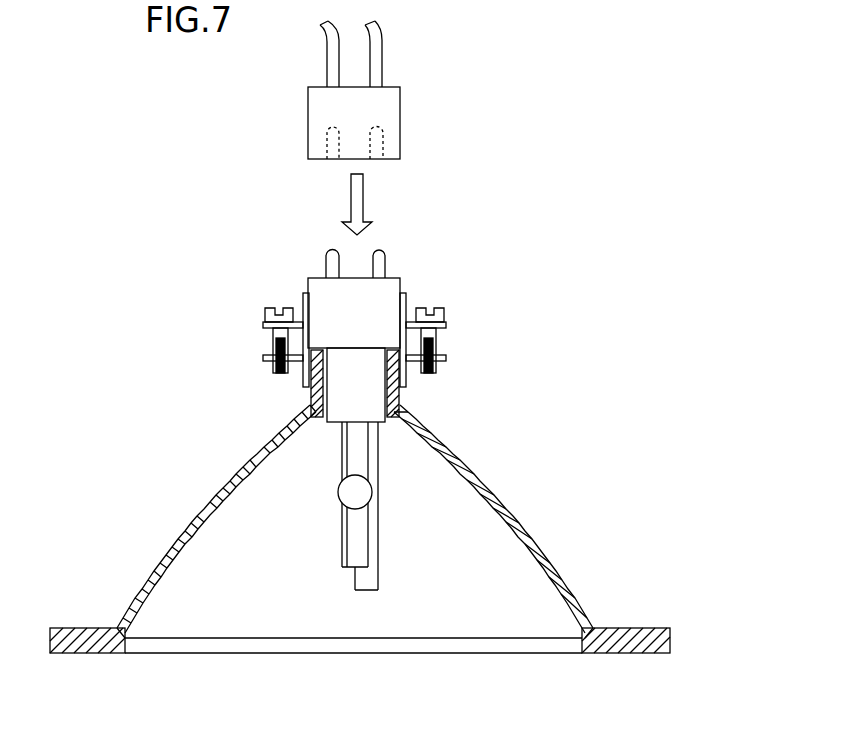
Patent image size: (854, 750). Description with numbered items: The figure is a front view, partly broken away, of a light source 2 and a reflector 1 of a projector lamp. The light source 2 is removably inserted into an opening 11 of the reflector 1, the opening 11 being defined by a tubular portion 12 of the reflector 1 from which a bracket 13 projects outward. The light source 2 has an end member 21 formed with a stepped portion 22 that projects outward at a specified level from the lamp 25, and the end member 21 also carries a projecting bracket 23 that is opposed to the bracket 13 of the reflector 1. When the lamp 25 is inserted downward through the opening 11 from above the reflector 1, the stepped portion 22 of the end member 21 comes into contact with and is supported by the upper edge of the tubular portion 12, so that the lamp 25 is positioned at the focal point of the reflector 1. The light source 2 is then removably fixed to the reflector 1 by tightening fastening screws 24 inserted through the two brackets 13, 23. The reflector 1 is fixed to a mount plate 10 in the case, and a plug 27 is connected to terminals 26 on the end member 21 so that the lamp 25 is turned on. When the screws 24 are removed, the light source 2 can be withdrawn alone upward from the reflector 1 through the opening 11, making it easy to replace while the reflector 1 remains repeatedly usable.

The reflector 1 is at (497, 455).
The light source 2 is at (320, 496).
The mount plate 10 is at (633, 628).
The opening 11 is at (392, 410).
The tubular portion 12 is at (399, 392).
The bracket 13 is at (446, 358).
The end member 21 is at (401, 286).
The stepped portion 22 is at (379, 347).
The projecting bracket 23 is at (265, 324).
The fastening screws 24 is at (276, 308).
The lamp 25 is at (358, 498).
The terminals 26 is at (379, 252).
The plug 27 is at (400, 112).